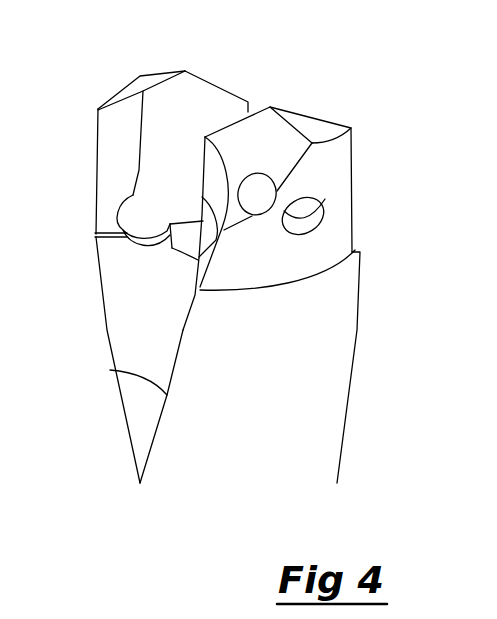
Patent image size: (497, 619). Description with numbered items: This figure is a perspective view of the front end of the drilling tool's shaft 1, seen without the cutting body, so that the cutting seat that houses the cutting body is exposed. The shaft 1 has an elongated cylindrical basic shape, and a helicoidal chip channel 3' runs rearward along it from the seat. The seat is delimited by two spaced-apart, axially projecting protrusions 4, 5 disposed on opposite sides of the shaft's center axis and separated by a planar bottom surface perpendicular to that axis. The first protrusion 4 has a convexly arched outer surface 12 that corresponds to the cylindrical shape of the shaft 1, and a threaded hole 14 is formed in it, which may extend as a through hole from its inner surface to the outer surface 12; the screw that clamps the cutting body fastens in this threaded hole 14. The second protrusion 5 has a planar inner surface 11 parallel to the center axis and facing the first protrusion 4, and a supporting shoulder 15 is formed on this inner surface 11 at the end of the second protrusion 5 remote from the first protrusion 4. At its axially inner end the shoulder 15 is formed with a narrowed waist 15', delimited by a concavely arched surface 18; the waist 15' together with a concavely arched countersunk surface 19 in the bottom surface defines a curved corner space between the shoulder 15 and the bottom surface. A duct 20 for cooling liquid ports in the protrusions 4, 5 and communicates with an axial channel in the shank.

The shaft 1 is at (349, 410).
The chip channel 3' is at (151, 360).
The first protrusion 4 is at (333, 121).
The second protrusion 5 is at (107, 93).
The inner surface 11 is at (200, 102).
The outer surface 12 is at (303, 270).
The threaded hole 14 is at (297, 226).
The supporting shoulder 15 is at (168, 169).
The narrowed waist 15' is at (79, 230).
The concavely arched surface 18 is at (123, 197).
The concavely arched countersunk surface 19 is at (150, 245).
The duct 20 is at (264, 174).